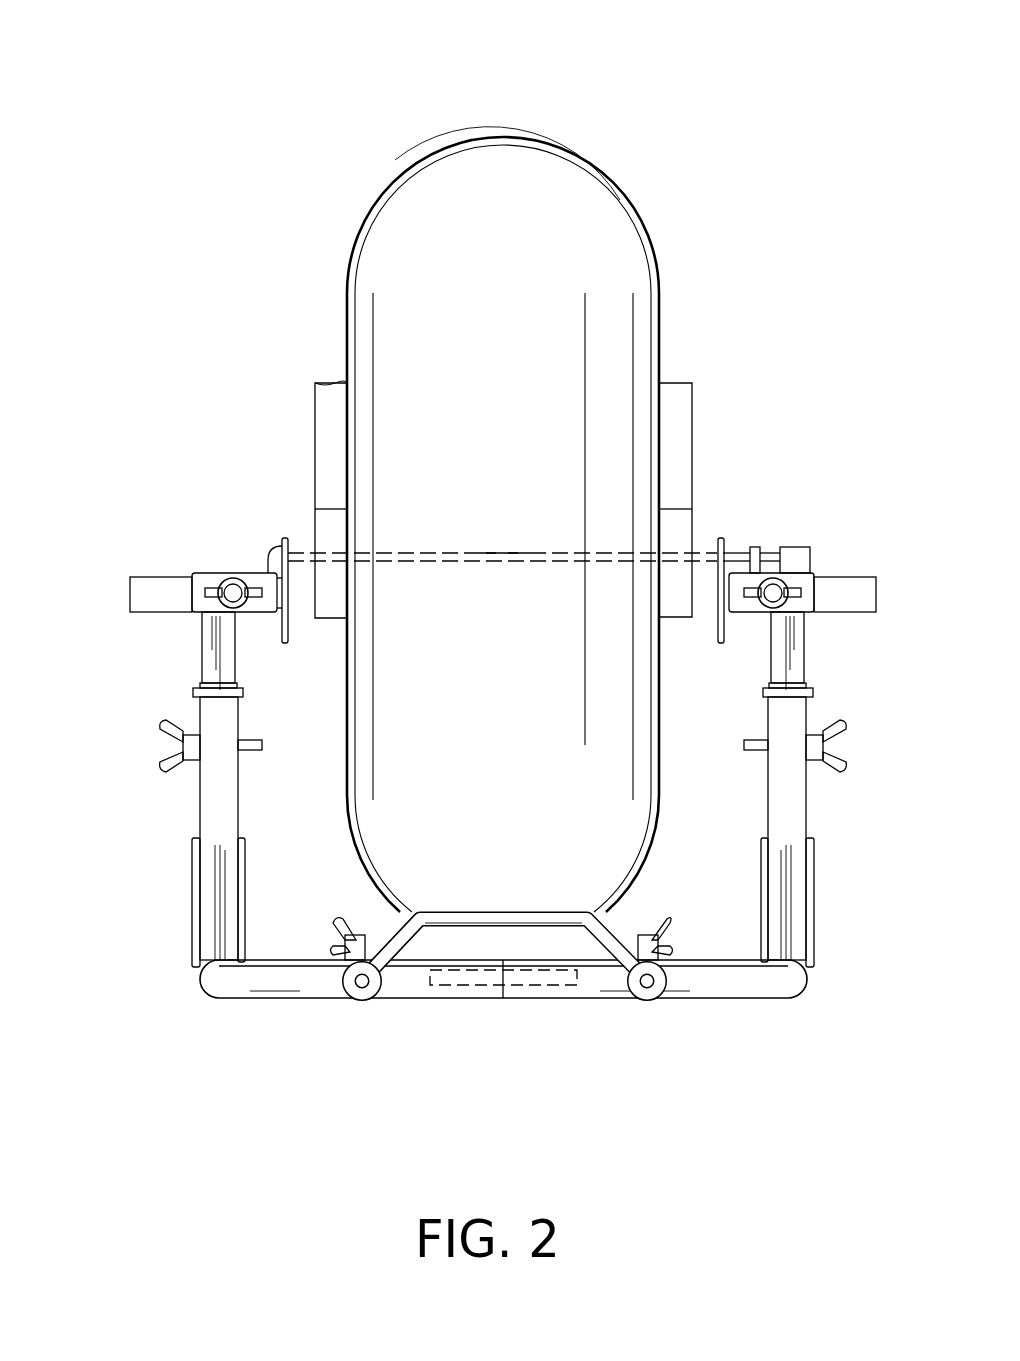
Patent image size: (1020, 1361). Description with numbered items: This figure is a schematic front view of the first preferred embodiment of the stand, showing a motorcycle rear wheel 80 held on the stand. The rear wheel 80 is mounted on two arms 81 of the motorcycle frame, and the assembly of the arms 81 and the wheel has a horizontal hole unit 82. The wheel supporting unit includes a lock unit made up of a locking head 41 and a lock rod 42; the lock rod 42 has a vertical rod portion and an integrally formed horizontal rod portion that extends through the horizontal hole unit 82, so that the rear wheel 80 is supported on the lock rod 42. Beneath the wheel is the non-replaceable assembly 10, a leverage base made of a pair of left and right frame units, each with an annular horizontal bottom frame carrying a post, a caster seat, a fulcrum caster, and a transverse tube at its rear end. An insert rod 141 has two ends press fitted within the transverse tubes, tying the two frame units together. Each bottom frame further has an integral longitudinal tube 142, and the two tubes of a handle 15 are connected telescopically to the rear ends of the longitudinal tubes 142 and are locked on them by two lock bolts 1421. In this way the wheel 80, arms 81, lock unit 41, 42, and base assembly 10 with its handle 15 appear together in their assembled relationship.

The rear wheel 80 is at (492, 124).
The arms 81 is at (329, 522).
The horizontal hole unit 82 is at (518, 562).
The lock rod 42 is at (493, 553).
The locking head 41 is at (757, 547).
The non-replaceable assembly 10 is at (190, 807).
The longitudinal tube 142 is at (338, 1000).
The insert rod 141 is at (454, 1005).
The lock bolt 1421 is at (648, 928).
The handle 15 is at (562, 928).